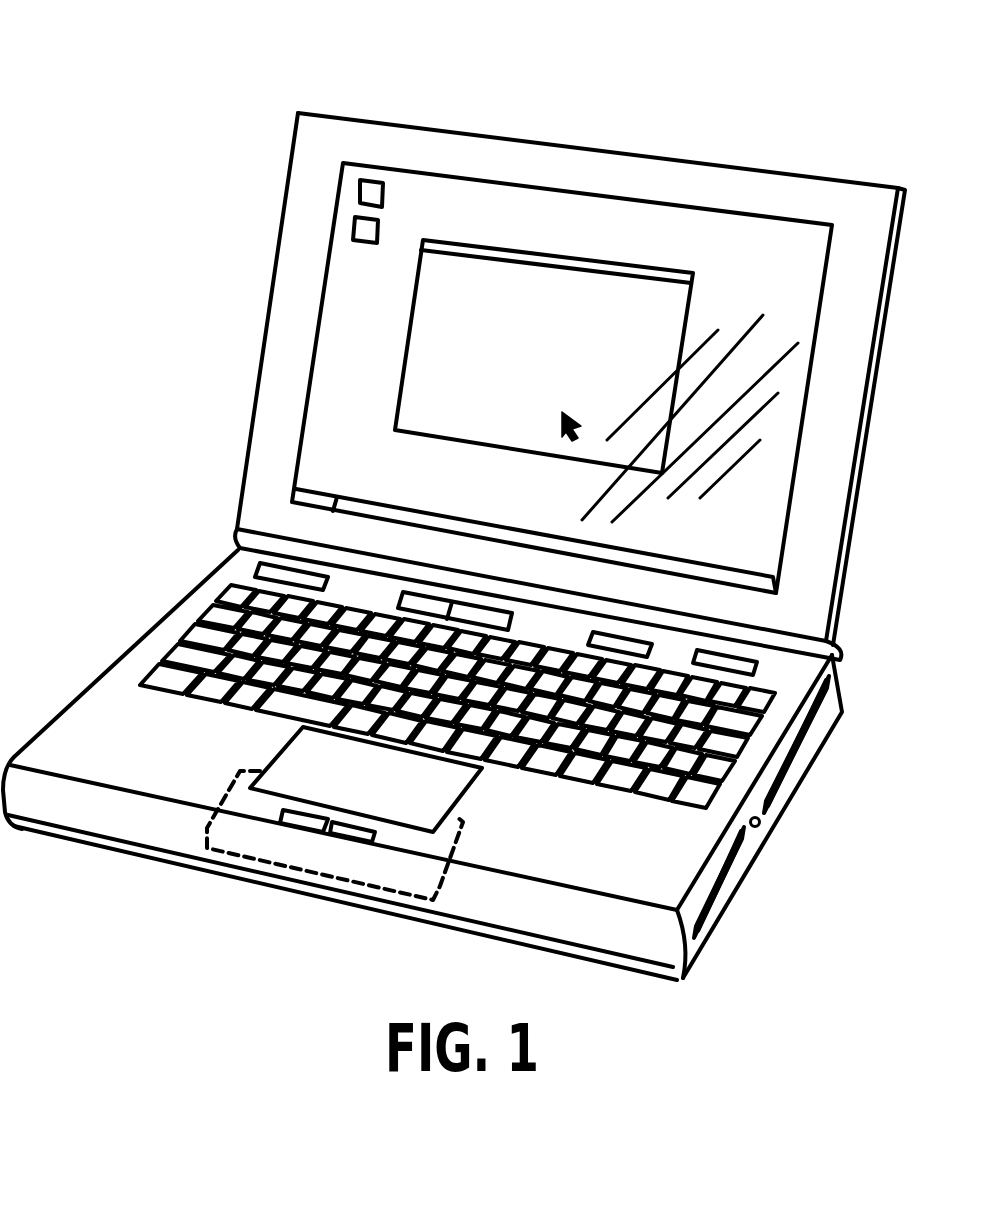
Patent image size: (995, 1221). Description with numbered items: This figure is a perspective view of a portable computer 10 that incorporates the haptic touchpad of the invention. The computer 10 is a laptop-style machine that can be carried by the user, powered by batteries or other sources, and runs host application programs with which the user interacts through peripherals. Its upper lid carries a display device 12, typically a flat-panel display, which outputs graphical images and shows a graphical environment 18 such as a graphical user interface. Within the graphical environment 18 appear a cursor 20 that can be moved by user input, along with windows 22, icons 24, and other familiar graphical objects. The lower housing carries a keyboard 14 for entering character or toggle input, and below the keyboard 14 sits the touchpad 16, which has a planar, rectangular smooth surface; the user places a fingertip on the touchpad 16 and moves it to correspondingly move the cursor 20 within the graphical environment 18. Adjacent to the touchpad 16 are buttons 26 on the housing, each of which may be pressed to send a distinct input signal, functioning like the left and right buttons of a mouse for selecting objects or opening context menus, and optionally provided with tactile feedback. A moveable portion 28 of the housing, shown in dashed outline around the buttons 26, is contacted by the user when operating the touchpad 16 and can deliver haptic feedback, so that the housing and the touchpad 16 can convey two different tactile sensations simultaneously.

The portable computer 10 is at (220, 298).
The display device 12 is at (526, 210).
The keyboard 14 is at (221, 624).
The touchpad 16 is at (371, 796).
The graphical environment 18 is at (378, 344).
The cursor 20 is at (558, 413).
The windows 22 is at (588, 247).
The icons 24 is at (378, 233).
The buttons 26 is at (327, 834).
The moveable portion of the housing 28 is at (375, 900).